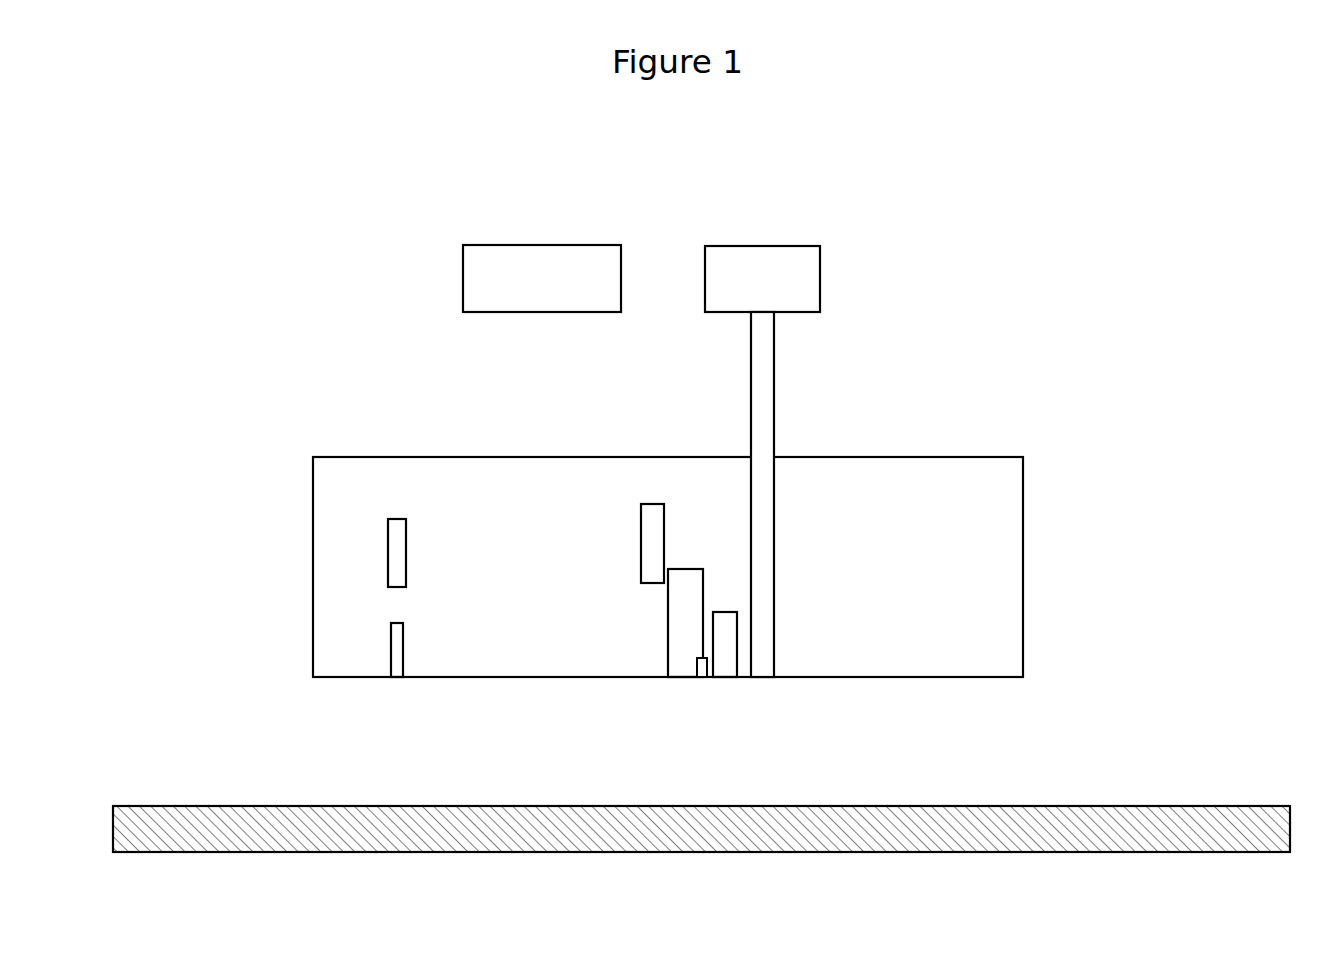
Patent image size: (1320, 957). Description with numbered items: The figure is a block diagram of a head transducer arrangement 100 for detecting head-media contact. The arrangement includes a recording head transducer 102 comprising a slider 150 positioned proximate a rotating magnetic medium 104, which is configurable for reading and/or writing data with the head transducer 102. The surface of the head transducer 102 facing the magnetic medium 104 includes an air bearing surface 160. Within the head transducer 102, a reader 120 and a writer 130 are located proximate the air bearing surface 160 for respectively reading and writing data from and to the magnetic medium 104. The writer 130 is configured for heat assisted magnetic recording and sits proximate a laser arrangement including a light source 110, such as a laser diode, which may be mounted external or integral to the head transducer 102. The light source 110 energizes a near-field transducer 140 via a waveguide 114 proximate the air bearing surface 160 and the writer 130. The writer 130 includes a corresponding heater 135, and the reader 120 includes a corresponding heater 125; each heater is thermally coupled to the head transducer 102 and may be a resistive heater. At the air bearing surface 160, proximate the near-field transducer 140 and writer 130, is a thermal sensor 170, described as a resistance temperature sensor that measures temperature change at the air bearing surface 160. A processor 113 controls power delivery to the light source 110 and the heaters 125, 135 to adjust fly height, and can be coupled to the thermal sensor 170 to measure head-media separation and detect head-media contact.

The head transducer arrangement 100 is at (340, 142).
The recording head transducer 102 is at (1024, 518).
The magnetic medium 104 is at (1234, 805).
The light source 110 is at (820, 270).
The processor 113 is at (463, 277).
The waveguide 114 is at (774, 389).
The reader 120 is at (404, 649).
The heater 125 is at (407, 553).
The writer 130 is at (668, 634).
The heater 135 is at (640, 550).
The near-field transducer 140 is at (721, 612).
The slider 150 is at (334, 697).
The air bearing surface 160 is at (828, 697).
The thermal sensor 170 is at (701, 678).